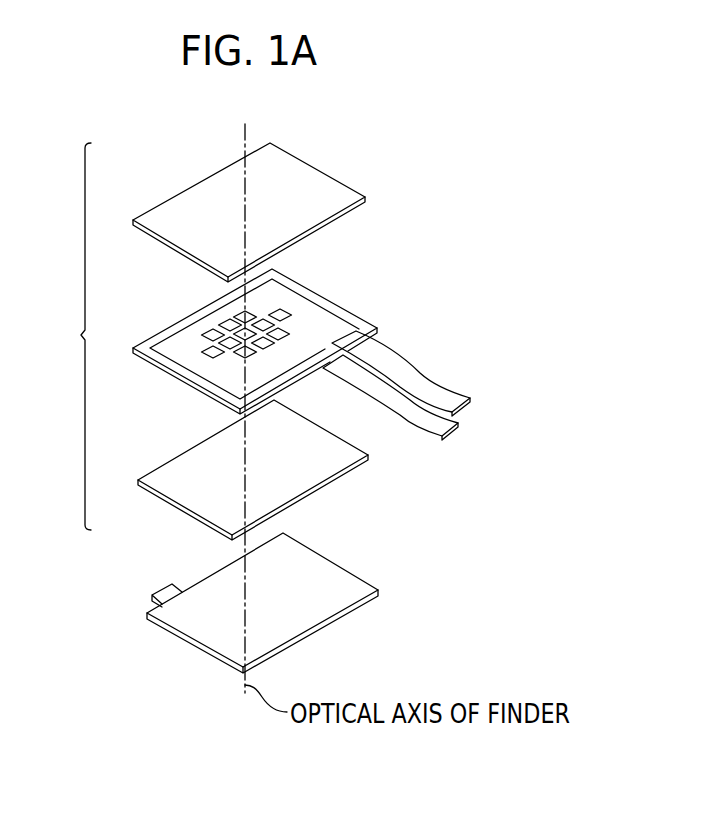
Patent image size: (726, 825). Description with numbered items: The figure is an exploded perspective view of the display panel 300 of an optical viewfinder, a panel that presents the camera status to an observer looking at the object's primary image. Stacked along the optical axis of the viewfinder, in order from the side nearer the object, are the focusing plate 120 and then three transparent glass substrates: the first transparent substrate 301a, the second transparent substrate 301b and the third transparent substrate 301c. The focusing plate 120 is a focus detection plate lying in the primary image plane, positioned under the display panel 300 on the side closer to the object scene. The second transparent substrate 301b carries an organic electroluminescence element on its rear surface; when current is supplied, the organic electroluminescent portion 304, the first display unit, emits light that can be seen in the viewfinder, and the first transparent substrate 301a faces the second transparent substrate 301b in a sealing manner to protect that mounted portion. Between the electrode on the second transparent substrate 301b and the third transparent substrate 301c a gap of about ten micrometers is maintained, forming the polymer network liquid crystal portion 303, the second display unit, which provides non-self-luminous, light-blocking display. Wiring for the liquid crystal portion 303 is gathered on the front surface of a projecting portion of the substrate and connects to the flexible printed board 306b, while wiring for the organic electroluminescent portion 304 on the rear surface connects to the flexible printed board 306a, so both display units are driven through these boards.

The display panel 300 is at (64, 336).
The first transparent substrate 301a is at (310, 473).
The second transparent substrate 301b is at (375, 326).
The third transparent substrate 301c is at (318, 185).
The polymer network liquid crystal portion 303 is at (178, 352).
The organic electroluminescent portion 304 is at (219, 364).
The flexible printed board 306a is at (417, 428).
The flexible printed board 306b is at (445, 388).
The focusing plate 120 is at (310, 610).